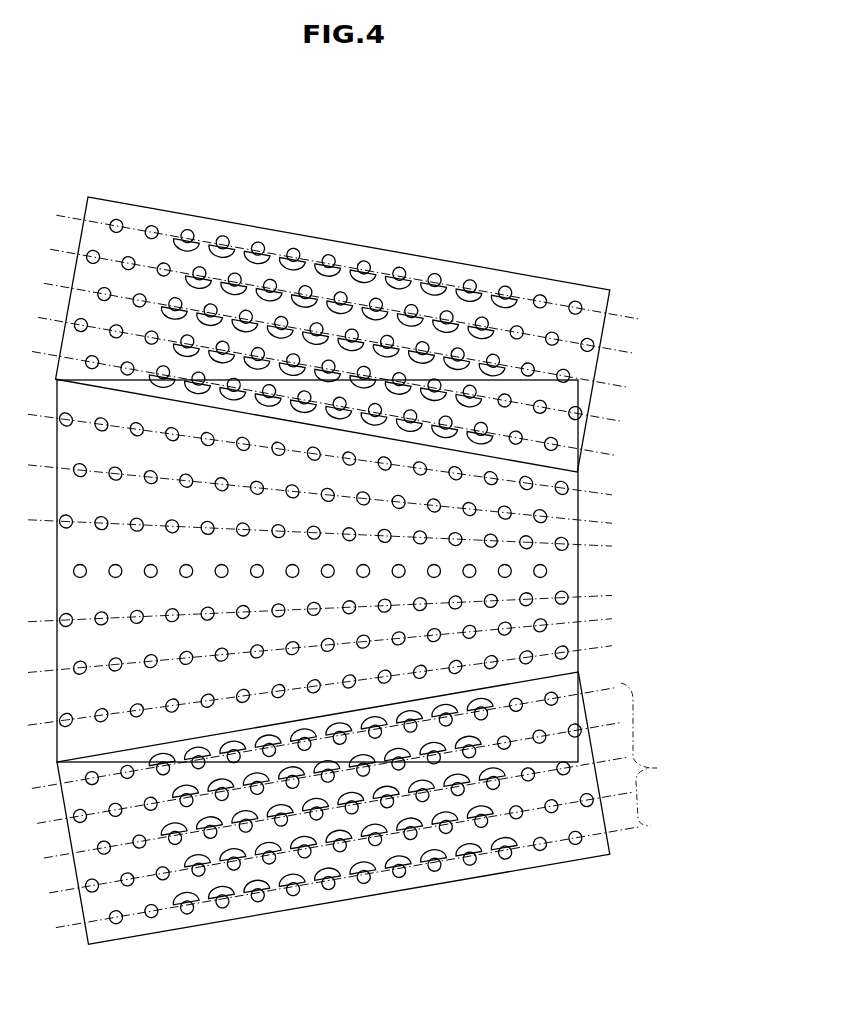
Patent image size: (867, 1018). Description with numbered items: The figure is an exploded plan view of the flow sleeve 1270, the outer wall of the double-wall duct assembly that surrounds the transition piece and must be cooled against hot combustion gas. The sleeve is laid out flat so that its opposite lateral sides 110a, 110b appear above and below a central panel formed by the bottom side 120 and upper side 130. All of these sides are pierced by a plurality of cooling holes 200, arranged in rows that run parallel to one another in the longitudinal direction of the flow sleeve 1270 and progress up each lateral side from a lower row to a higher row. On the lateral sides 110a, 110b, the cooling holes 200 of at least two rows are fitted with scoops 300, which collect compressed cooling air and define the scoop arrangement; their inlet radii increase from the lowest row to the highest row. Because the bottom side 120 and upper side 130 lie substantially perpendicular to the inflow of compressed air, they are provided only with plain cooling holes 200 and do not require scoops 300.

The flow sleeve 1270 is at (363, 573).
The lateral side 110a is at (340, 838).
The lateral side 110b is at (282, 237).
The bottom side 120 is at (364, 571).
The upper side 130 is at (563, 588).
The cooling holes 200 is at (342, 843).
The scoops 300 is at (306, 858).